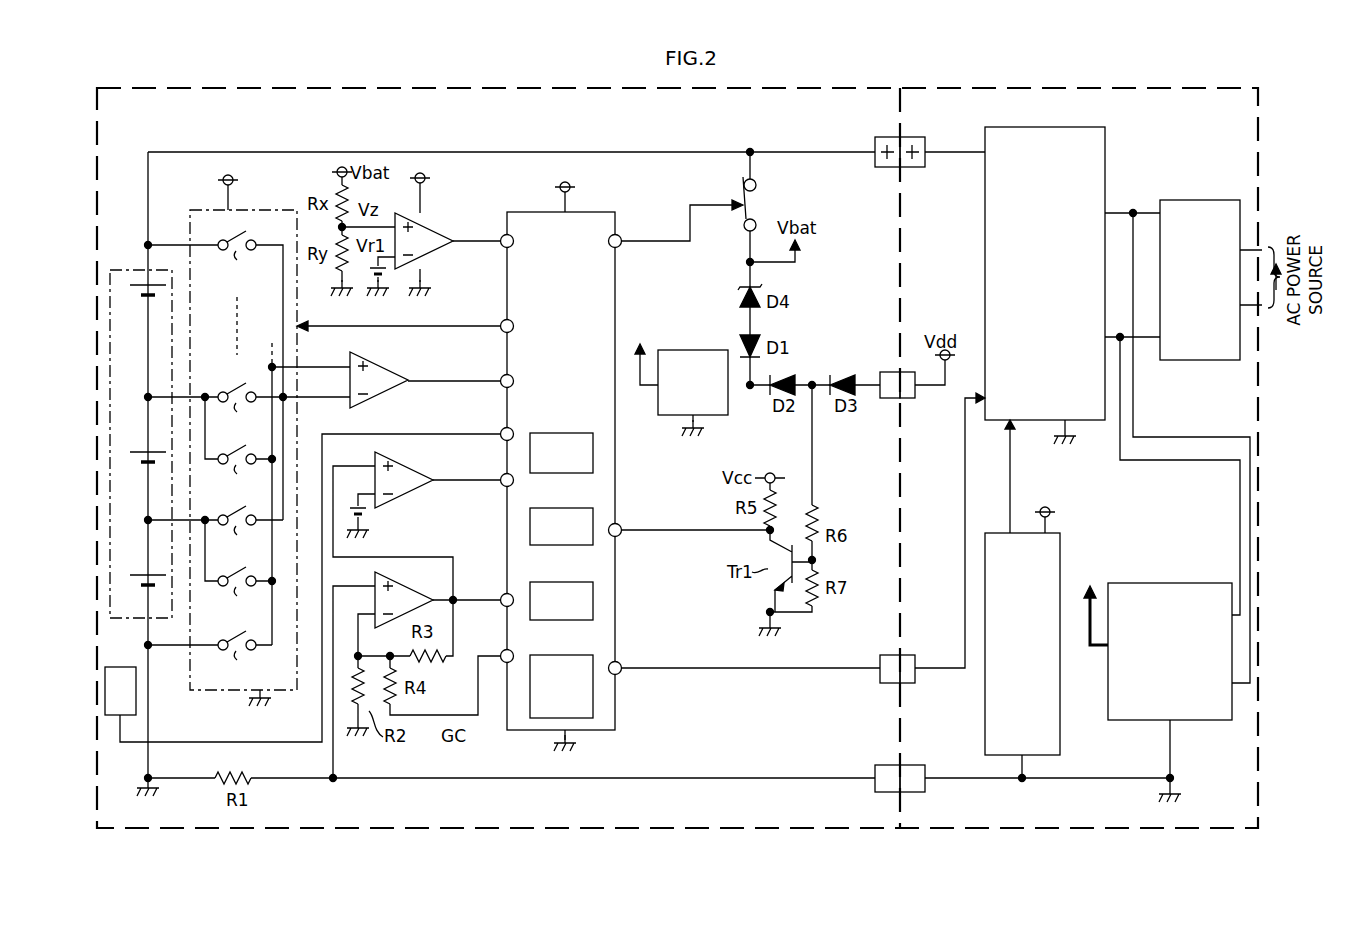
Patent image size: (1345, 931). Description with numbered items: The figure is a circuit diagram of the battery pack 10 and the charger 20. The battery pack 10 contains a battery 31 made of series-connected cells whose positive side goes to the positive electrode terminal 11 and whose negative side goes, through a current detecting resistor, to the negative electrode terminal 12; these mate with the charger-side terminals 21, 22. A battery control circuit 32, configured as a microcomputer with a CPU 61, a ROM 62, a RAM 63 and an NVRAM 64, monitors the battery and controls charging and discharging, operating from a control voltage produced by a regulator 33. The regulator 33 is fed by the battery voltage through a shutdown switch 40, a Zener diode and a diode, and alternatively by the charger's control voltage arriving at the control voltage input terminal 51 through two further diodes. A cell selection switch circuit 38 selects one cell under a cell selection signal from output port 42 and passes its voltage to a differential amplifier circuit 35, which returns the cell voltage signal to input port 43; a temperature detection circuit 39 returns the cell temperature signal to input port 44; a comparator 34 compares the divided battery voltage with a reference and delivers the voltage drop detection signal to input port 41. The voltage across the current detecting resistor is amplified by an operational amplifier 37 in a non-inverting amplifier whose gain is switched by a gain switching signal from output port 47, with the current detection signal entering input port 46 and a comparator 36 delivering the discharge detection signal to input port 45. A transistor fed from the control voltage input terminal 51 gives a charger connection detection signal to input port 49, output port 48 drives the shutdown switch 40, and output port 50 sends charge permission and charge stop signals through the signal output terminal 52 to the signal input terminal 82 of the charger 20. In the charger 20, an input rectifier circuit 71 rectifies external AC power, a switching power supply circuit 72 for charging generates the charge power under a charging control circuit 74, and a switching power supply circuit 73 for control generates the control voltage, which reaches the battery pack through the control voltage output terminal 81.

The battery pack 10 is at (490, 90).
The charger 20 is at (1195, 90).
The positive electrode terminal 11 is at (876, 140).
The charger positive terminal 21 is at (913, 137).
The negative electrode terminal 12 is at (878, 791).
The charger negative terminal 22 is at (924, 791).
The battery 31 is at (122, 270).
The battery control circuit 32 is at (588, 457).
The regulator 33 is at (702, 343).
The comparator for voltage drop detection 34 is at (434, 250).
The differential amplifier circuit 35 is at (372, 364).
The comparator for discharge detection 36 is at (405, 494).
The operational amplifier 37 is at (400, 584).
The cell selection switch circuit 38 is at (196, 210).
The temperature detection circuit 39 is at (120, 667).
The shutdown switch 40 is at (764, 189).
The input port 41 is at (501, 234).
The output port 42 is at (500, 323).
The input port 43 is at (500, 378).
The input port 44 is at (500, 431).
The input port 45 is at (501, 486).
The input port 46 is at (501, 594).
The output port 47 is at (501, 651).
The output port 48 is at (624, 248).
The input port 49 is at (622, 538).
The output port 50 is at (623, 671).
The control voltage input terminal 51 is at (890, 372).
The signal output terminal 52 is at (884, 684).
The CPU 61 is at (582, 434).
The ROM 62 is at (582, 509).
The RAM 63 is at (582, 584).
The NVRAM 64 is at (582, 657).
The input rectifier circuit 71 is at (1200, 362).
The switching power supply circuit for charging 72 is at (1020, 127).
The switching power supply circuit for control 73 is at (1168, 583).
The charging control circuit 74 is at (1060, 739).
The control voltage output terminal 81 is at (912, 398).
The signal input terminal 82 is at (912, 684).